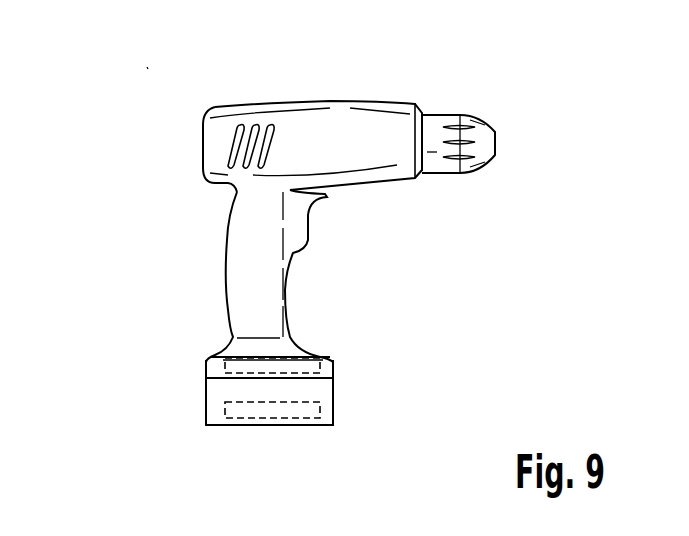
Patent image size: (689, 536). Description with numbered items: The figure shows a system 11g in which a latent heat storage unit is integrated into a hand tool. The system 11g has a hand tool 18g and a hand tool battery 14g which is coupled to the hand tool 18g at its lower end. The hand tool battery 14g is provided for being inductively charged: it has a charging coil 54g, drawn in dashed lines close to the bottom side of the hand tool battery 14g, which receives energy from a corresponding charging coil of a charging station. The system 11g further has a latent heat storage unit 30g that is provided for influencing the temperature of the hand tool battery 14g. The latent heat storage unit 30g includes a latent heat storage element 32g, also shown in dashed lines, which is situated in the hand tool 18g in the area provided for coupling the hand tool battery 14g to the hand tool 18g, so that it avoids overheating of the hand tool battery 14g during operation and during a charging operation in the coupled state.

The system 11g is at (146, 66).
The hand tool 18g is at (372, 118).
The latent heat storage unit 30g is at (188, 329).
The hand tool battery 14g is at (327, 392).
The latent heat storage element 32g is at (225, 363).
The charging coil 54g is at (225, 408).